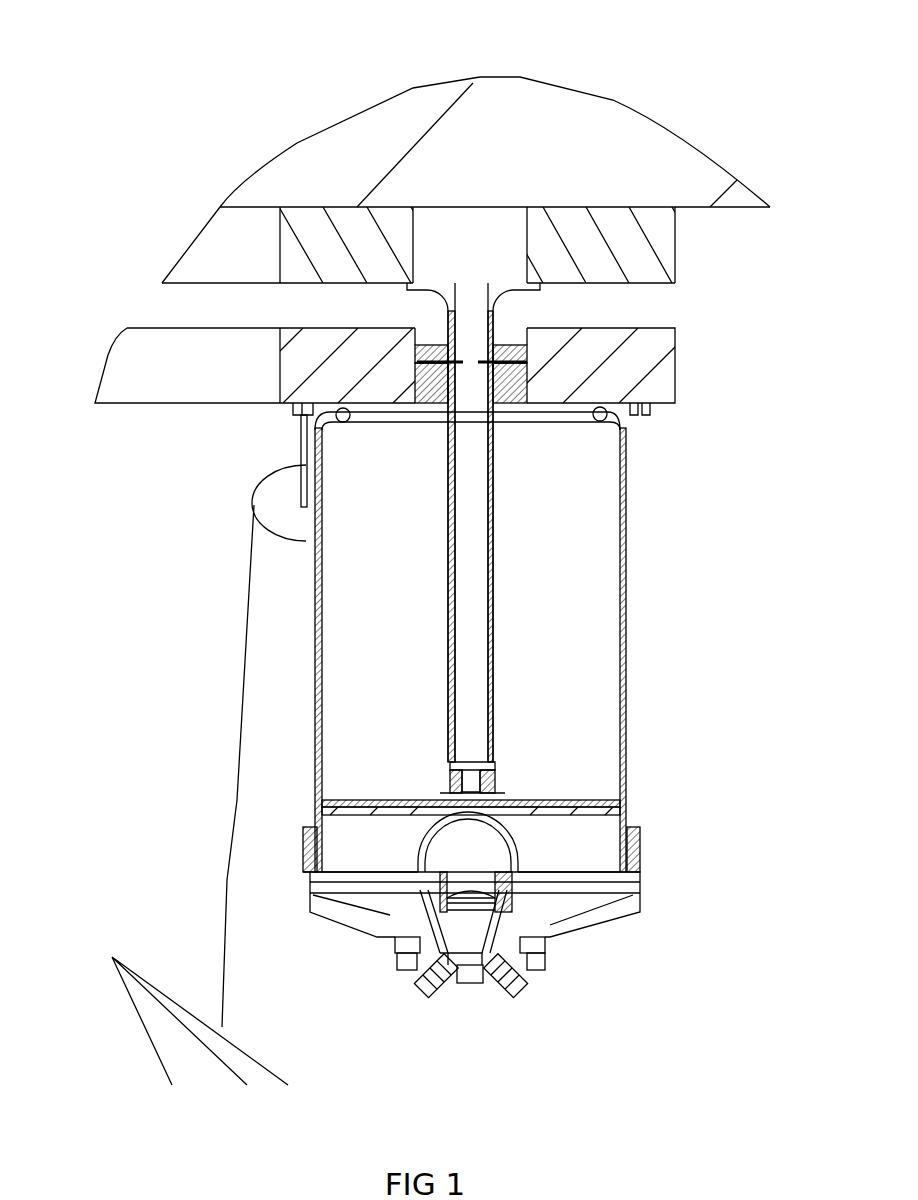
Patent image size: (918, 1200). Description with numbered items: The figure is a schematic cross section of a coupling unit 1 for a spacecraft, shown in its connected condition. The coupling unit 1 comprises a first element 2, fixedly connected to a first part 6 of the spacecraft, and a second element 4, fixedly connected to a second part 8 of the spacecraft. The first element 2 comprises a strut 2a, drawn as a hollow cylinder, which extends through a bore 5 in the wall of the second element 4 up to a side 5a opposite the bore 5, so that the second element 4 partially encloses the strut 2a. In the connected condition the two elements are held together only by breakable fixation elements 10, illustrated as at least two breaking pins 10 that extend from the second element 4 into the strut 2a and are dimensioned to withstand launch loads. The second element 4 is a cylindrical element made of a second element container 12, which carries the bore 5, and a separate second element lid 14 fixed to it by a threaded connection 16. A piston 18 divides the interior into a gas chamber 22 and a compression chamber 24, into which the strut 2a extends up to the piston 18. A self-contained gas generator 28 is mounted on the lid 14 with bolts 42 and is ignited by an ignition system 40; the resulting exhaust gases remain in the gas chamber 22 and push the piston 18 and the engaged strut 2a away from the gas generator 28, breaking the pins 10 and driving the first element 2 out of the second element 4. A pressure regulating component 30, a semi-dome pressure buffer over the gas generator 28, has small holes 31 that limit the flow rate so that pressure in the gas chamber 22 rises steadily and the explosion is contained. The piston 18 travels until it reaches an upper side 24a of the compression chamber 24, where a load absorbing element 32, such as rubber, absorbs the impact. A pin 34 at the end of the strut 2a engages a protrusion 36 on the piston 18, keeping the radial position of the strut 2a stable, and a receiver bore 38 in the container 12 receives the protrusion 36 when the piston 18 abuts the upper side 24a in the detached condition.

The coupling unit 1 is at (660, 103).
The first element 2 is at (542, 290).
The strut 2a is at (495, 675).
The second element 4 is at (640, 422).
The bore 5 is at (440, 395).
The side opposite the bore 5a is at (445, 795).
The first part of the spacecraft 6 is at (310, 167).
The second part of the spacecraft 8 is at (280, 250).
The breakable fixation element 10 is at (427, 343).
The second element container 12 is at (626, 622).
The second element lid 14 is at (647, 893).
The threaded connection 16 is at (636, 853).
The piston 18 is at (335, 803).
The gas chamber 22 is at (365, 845).
The compression chamber 24 is at (355, 668).
The upper side of the compression chamber 24a is at (416, 401).
The gas generator 28 is at (317, 917).
The pressure regulating component 30 is at (520, 837).
The small holes 31 is at (600, 930).
The load absorbing element 32 is at (315, 423).
The pin 34 is at (472, 777).
The protrusion 36 is at (495, 792).
The receiver bore 38 is at (518, 393).
The ignition system 40 is at (445, 995).
The bolts 42 is at (407, 975).